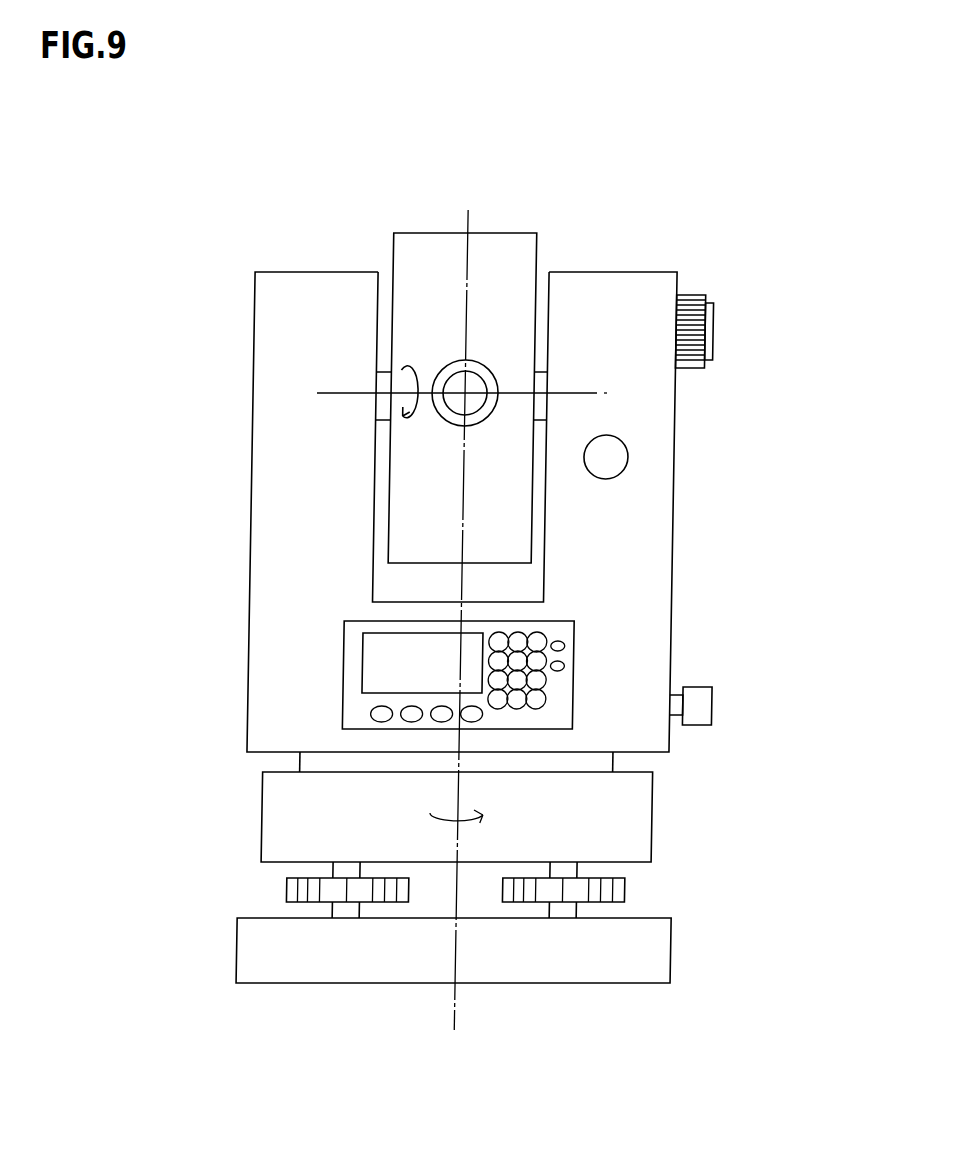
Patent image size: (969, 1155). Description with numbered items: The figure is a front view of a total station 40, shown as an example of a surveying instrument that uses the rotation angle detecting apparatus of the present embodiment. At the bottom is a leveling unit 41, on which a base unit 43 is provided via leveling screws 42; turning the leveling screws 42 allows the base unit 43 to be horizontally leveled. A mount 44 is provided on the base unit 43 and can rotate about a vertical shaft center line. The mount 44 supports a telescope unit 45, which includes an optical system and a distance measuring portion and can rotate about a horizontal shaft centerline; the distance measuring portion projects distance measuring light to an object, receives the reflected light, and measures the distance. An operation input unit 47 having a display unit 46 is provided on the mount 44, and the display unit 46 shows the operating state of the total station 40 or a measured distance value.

The total station 40 is at (684, 173).
The leveling unit 41 is at (671, 958).
The leveling screws 42 is at (624, 890).
The base unit 43 is at (652, 818).
The mount 44 is at (252, 465).
The telescope unit 45 is at (391, 250).
The display unit 46 is at (380, 650).
The operation input unit 47 is at (557, 620).